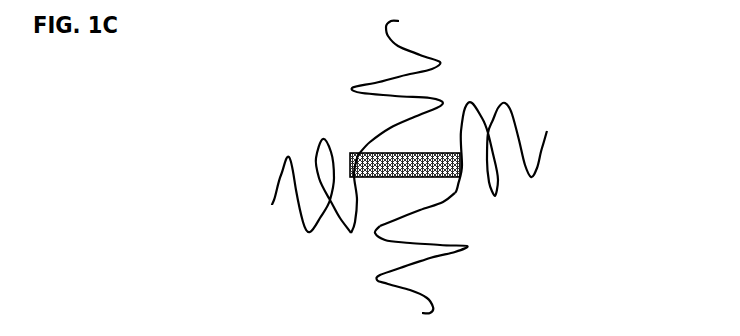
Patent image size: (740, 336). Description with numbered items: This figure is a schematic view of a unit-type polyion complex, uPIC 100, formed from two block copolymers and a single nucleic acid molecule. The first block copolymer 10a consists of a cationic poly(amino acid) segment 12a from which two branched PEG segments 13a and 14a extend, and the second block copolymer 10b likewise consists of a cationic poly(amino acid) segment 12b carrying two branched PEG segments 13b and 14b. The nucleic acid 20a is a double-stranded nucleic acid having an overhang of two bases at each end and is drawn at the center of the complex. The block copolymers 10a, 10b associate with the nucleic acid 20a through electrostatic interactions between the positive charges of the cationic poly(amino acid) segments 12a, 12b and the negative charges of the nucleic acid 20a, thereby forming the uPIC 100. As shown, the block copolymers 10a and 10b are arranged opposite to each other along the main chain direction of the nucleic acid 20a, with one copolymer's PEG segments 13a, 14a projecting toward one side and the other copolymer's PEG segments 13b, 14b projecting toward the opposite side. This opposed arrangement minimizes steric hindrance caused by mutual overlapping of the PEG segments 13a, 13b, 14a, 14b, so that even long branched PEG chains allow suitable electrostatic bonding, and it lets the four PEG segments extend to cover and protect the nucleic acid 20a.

The uPIC 100 is at (537, 21).
The block copolymer 10a is at (293, 17).
The cationic poly(amino acid) segment 12a is at (398, 152).
The PEG segment 13a is at (358, 83).
The PEG segment 14a is at (289, 157).
The nucleic acid 20a is at (433, 154).
The block copolymer 10b is at (607, 178).
The cationic poly(amino acid) segment 12b is at (405, 178).
The PEG segment 13b is at (531, 178).
The PEG segment 14b is at (433, 300).